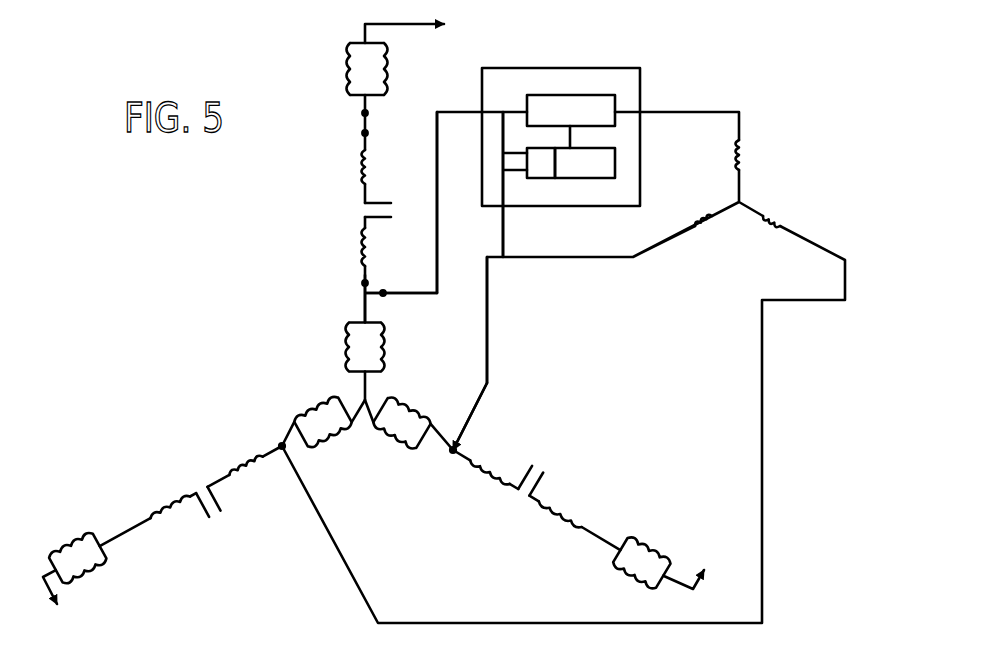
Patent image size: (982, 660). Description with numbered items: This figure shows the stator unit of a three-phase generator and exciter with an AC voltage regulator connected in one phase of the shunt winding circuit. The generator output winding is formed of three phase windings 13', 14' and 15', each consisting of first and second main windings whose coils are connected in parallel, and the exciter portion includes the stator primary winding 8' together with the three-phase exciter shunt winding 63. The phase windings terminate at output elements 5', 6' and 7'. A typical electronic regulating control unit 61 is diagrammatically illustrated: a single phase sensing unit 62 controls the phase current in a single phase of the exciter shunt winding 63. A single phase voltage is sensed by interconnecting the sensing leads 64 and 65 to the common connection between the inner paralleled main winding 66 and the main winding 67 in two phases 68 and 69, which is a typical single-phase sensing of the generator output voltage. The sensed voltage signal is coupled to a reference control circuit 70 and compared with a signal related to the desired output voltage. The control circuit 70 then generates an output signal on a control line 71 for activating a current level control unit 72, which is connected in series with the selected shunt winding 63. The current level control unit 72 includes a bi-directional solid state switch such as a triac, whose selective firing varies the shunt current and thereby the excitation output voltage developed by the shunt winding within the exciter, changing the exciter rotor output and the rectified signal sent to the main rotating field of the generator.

The output winding 5' is at (396, 59).
The phase winding 13' is at (356, 208).
The phase 68 is at (340, 304).
The inner paralleled main winding 66 is at (349, 352).
The main winding 67 is at (411, 442).
The phase winding 14' is at (191, 496).
The phase output winding 6' is at (75, 571).
The phase 69 is at (481, 510).
The phase winding 15' is at (545, 505).
The phase output winding 7' is at (658, 551).
The exciter shunt winding 63 is at (745, 151).
The stator primary winding 8' is at (737, 202).
The sensing lead 64 is at (436, 183).
The sensing lead 65 is at (500, 238).
The electronic regulating control unit 61 is at (640, 160).
The current level control unit 72 is at (590, 94).
The control line 71 is at (571, 136).
The single phase sensing unit 62 is at (540, 178).
The reference control circuit 70 is at (598, 178).